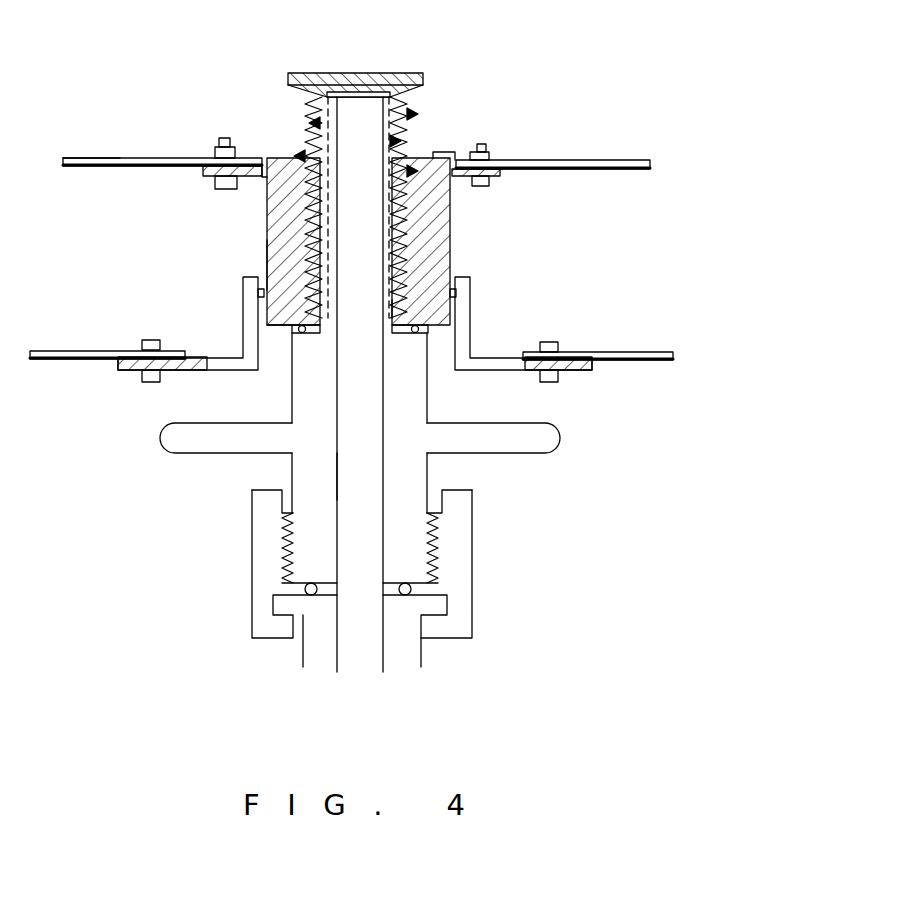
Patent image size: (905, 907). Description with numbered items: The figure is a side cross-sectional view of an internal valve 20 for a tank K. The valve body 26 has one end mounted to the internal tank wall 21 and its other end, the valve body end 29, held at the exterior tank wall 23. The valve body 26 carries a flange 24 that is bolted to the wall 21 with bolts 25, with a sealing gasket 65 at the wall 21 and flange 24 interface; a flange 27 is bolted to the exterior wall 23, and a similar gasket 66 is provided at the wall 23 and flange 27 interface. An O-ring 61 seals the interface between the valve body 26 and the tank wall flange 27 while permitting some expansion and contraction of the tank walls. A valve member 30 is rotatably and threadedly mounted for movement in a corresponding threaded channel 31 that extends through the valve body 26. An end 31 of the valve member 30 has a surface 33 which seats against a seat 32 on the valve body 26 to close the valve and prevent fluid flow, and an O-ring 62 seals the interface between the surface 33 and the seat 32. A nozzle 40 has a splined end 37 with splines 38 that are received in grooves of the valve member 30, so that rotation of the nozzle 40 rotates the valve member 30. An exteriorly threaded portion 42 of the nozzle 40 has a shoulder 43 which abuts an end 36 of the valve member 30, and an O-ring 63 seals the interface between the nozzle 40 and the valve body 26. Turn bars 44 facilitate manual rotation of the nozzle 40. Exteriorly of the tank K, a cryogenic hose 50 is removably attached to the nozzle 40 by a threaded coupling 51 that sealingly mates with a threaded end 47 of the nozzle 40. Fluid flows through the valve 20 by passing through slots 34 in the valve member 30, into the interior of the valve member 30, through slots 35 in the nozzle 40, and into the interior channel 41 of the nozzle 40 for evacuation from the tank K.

The internal valve 20 is at (297, 66).
The internal tank wall 21 is at (130, 158).
The tank K is at (87, 158).
The exterior tank wall 23 is at (98, 349).
The flange 24 is at (263, 177).
The bolts 25 is at (217, 147).
The valve body 26 is at (445, 212).
The flange 27 is at (208, 370).
The valve body end 29 is at (290, 318).
The valve member 30 is at (417, 73).
The threaded channel 31 is at (381, 73).
The seat 32 is at (296, 156).
The surface 33 is at (414, 113).
The slots 34 is at (412, 170).
The slots 35 is at (396, 140).
The end 36 is at (325, 222).
The splined end 37 is at (348, 115).
The splines 38 is at (306, 122).
The nozzle 40 is at (420, 343).
The interior channel 41 is at (340, 452).
The exteriorly threaded portion 42 is at (267, 257).
The shoulder 43 is at (425, 250).
The turn bars 44 is at (177, 445).
The threaded end 47 is at (410, 550).
The cryogenic hose 50 is at (410, 652).
The threaded coupling 51 is at (260, 523).
The O-ring 61 is at (245, 292).
The O-ring 62 is at (450, 154).
The O-ring 63 is at (305, 333).
The sealing gasket 65 is at (203, 172).
The gasket 66 is at (110, 360).